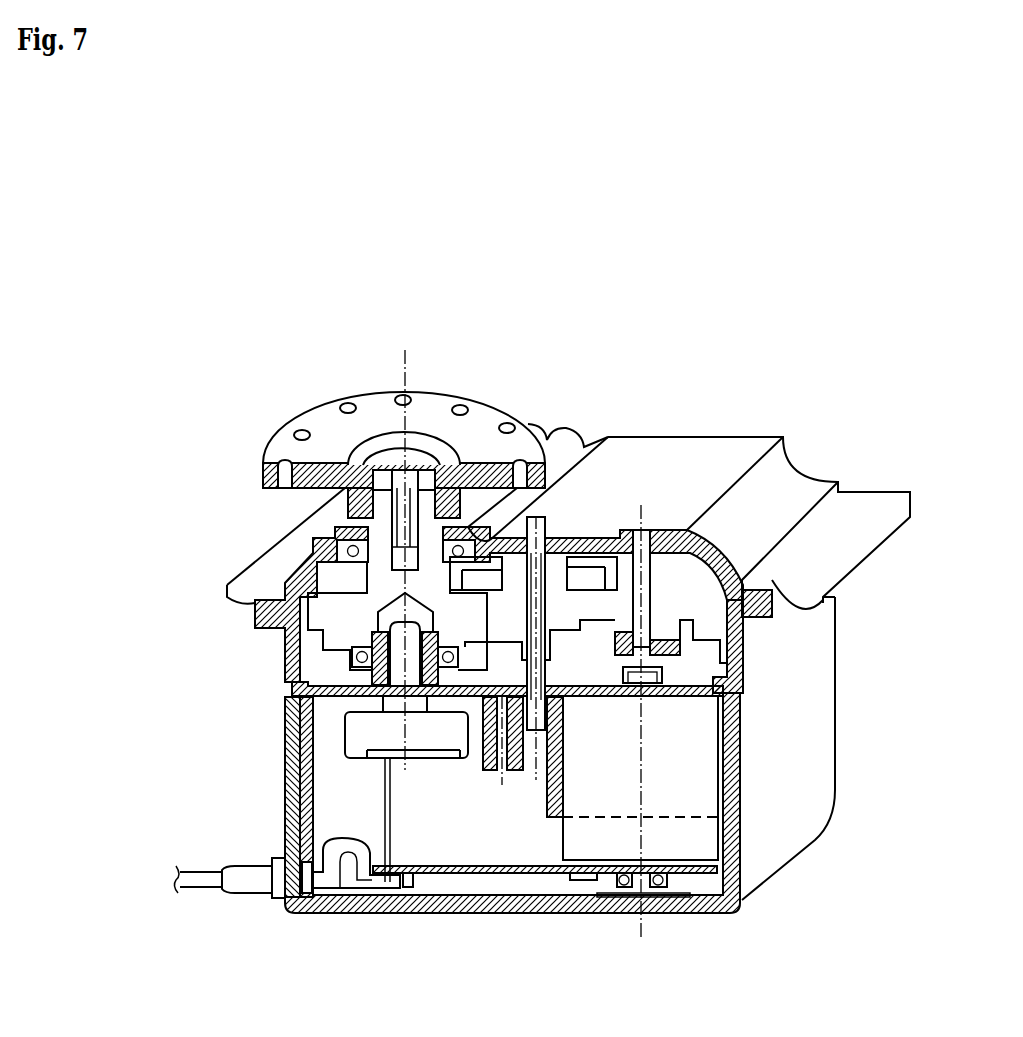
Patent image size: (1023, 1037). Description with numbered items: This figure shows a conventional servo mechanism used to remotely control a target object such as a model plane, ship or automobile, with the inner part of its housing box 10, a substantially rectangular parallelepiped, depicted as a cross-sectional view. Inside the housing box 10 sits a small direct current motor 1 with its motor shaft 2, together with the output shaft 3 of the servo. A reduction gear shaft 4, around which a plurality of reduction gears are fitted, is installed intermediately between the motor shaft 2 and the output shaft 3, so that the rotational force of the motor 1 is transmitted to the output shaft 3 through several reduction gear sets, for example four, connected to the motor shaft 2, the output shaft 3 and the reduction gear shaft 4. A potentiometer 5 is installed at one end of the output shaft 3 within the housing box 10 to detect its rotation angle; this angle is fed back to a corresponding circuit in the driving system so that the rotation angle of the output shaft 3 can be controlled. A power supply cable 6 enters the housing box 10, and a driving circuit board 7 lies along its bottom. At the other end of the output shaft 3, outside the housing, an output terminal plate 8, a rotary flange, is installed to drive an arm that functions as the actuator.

The motor 1 is at (690, 837).
The motor shaft 2 is at (640, 920).
The output shaft 3 is at (405, 363).
The reduction gear shaft 4 is at (535, 518).
The potentiometer 5 is at (372, 735).
The power supply cable 6 is at (245, 878).
The driving circuit board 7 is at (487, 873).
The output terminal plate 8 is at (323, 428).
The housing box 10 is at (812, 792).